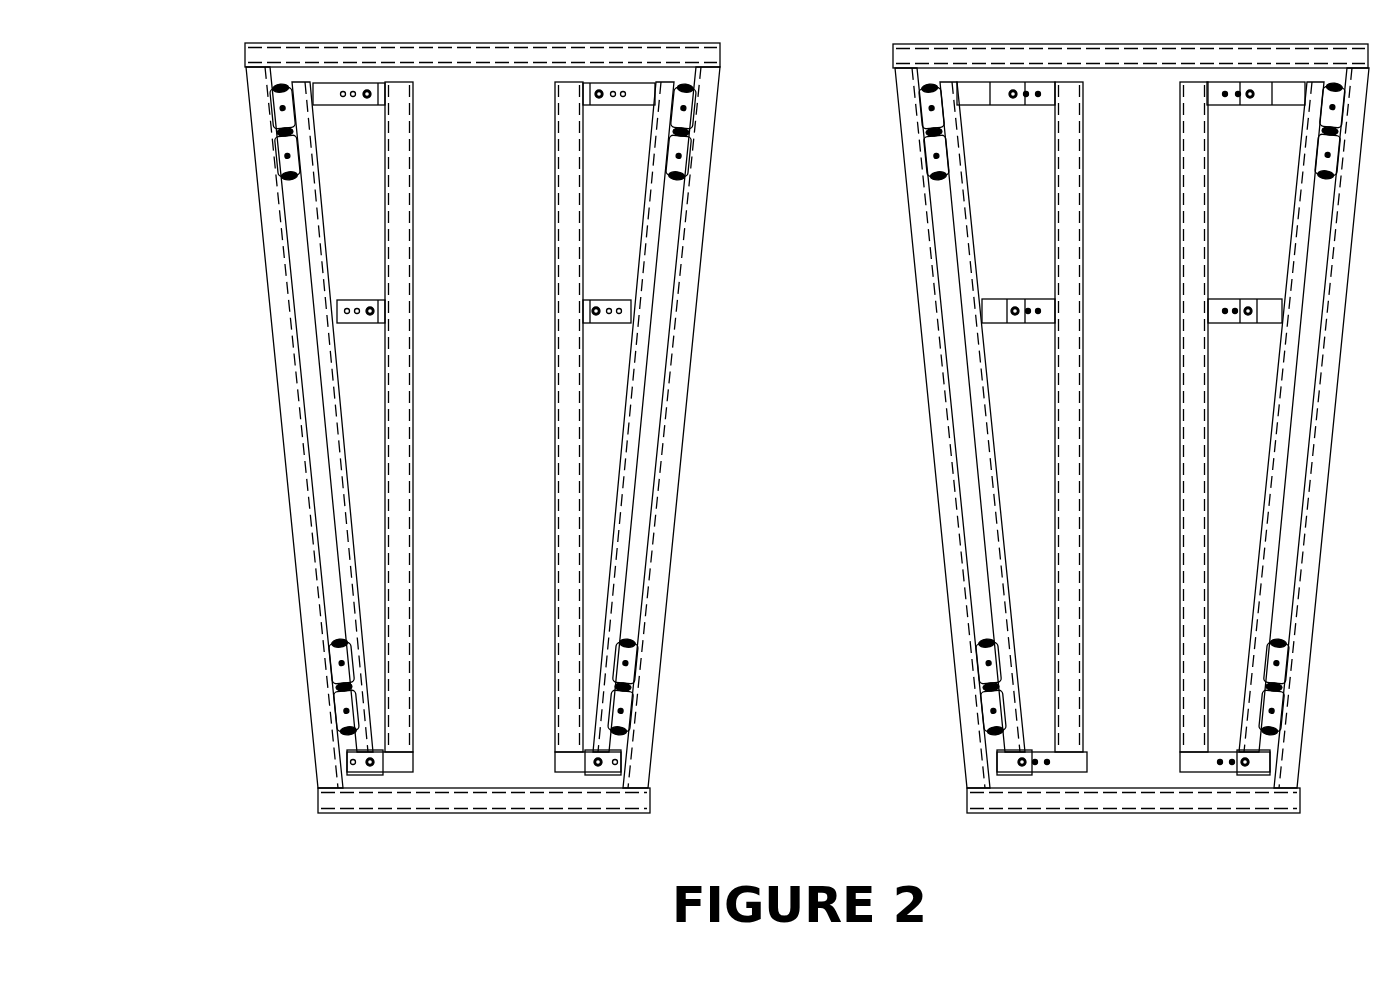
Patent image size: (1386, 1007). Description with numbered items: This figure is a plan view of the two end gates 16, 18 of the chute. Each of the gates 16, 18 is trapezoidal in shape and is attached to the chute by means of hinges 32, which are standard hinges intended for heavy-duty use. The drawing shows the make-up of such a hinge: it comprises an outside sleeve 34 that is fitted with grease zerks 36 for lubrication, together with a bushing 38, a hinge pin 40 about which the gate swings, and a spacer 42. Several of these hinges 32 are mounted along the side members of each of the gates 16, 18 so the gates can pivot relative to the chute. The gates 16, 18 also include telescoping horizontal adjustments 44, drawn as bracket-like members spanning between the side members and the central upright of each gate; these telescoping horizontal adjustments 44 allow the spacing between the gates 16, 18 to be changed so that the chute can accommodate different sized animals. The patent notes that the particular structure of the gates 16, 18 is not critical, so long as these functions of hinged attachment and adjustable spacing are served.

The gate 16 is at (439, 428).
The gate 18 is at (1131, 428).
The hinge 32 is at (268, 112).
The outside sleeve 34 is at (277, 164).
The grease zerk 36 is at (333, 713).
The bushing 38 is at (275, 427).
The hinge pin 40 is at (290, 177).
The spacer 42 is at (272, 131).
The telescoping horizontal adjustment 44 is at (358, 299).